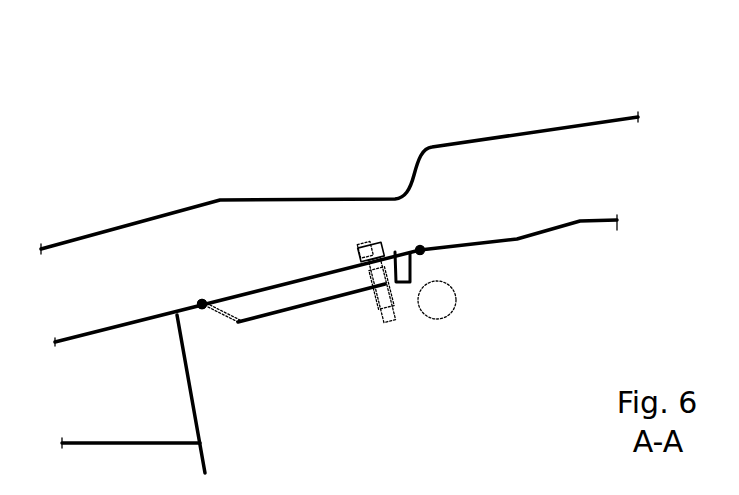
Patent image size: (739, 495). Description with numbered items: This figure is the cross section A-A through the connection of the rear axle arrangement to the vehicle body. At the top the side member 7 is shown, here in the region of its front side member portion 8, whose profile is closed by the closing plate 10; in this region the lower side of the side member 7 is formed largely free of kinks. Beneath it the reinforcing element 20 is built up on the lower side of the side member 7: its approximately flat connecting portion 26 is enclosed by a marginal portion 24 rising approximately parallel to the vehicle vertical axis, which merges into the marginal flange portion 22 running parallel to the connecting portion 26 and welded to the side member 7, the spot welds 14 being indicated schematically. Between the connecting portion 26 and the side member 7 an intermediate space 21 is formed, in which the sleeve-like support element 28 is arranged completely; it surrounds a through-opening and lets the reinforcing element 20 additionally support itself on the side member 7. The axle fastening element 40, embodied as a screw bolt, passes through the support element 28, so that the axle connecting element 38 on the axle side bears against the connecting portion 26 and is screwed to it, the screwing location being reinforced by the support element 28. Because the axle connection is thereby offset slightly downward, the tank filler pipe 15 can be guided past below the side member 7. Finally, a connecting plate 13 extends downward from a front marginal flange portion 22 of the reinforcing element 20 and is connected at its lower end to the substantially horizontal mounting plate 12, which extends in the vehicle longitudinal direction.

The side member 7 is at (517, 103).
The front side member portion 8 is at (517, 238).
The closing plate 10 is at (305, 199).
The mounting plate 12 is at (133, 443).
The connecting plate 13 is at (193, 405).
The spot weld 14 is at (420, 248).
The tank filler pipe 15 is at (437, 305).
The reinforcing element 20 is at (349, 401).
The intermediate space 21 is at (296, 290).
The marginal flange portion 22 is at (202, 303).
The marginal portion 24 is at (228, 322).
The connecting portion 26 is at (278, 322).
The support element 28 is at (363, 275).
The axle connecting element 38 is at (368, 305).
The axle fastening element 40 is at (387, 322).